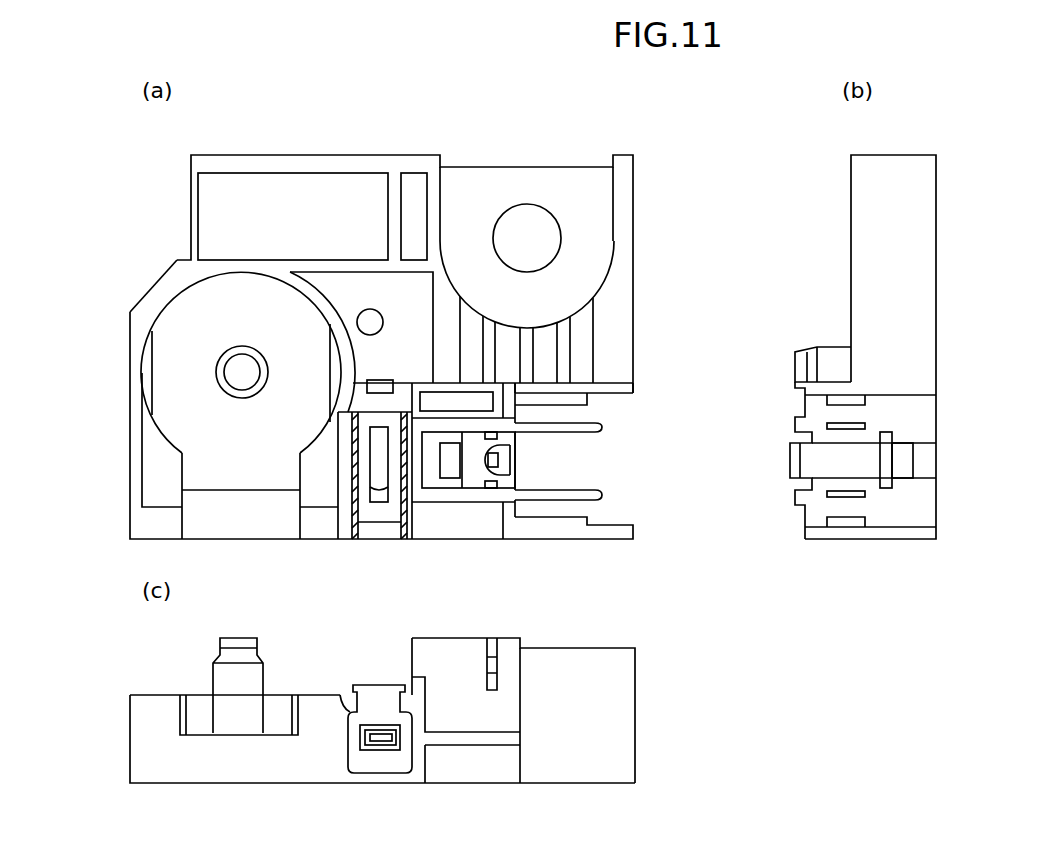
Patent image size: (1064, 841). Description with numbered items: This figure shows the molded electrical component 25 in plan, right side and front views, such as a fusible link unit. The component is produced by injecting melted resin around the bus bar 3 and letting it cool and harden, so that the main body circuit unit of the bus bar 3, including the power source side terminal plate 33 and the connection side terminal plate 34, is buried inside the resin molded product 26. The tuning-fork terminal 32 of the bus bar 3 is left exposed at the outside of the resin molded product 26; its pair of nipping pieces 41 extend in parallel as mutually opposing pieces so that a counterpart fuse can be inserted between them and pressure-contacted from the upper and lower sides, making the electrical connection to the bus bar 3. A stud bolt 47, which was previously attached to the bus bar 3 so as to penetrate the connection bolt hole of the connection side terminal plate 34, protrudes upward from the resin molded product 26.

The bus bar 3 is at (560, 156).
The electrical component 25 is at (502, 143).
The resin molded product 26 is at (322, 153).
The tuning-fork terminal 32 is at (645, 415).
The power source side terminal plate 33 is at (598, 197).
The connection side terminal plate 34 is at (187, 318).
The nipping pieces 41 is at (602, 427).
The stud bolt 47 is at (233, 372).